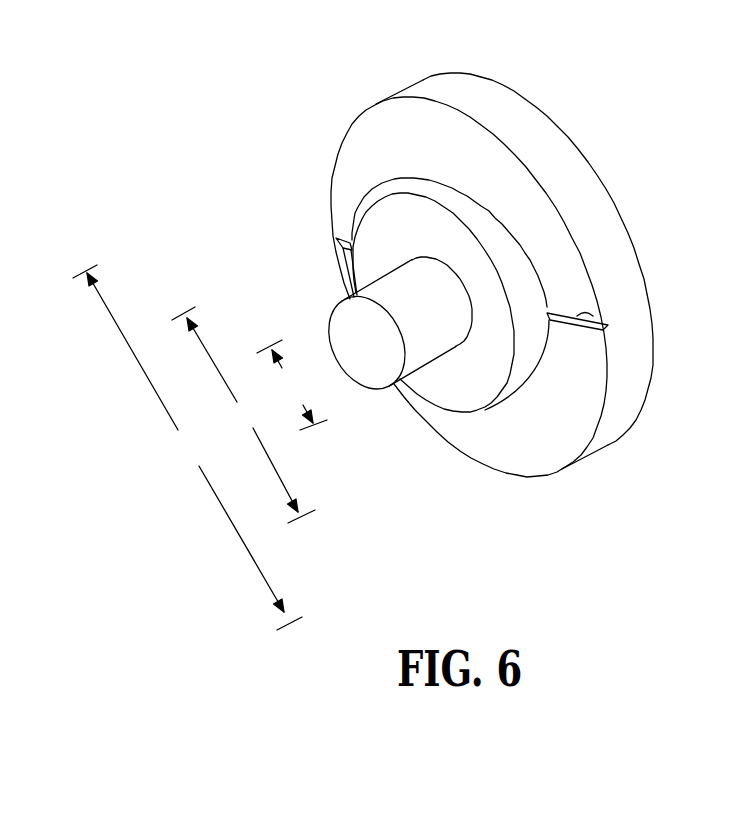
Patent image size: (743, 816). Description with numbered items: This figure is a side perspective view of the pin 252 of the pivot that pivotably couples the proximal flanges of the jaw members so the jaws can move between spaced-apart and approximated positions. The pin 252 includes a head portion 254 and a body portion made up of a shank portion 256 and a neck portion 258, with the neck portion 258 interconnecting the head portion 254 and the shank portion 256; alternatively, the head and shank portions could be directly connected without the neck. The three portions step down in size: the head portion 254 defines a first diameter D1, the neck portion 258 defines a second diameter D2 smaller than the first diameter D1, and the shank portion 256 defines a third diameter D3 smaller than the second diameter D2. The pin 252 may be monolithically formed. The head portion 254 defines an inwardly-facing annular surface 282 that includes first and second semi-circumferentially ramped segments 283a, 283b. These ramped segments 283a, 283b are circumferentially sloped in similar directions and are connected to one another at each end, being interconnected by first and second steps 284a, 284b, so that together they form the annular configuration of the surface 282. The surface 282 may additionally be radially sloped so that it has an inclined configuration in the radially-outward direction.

The pin 252 is at (366, 83).
The head portion 254 is at (468, 303).
The shank portion 256 is at (420, 340).
The neck portion 258 is at (497, 282).
The inwardly-facing annular surface 282 is at (461, 173).
The first semi-circumferentially ramped segment 283a is at (560, 450).
The second semi-circumferentially ramped segment 283b is at (347, 160).
The first step 284a is at (606, 331).
The second step 284b is at (344, 248).
The first diameter D1 is at (187, 447).
The second diameter D2 is at (243, 415).
The third diameter D3 is at (292, 385).